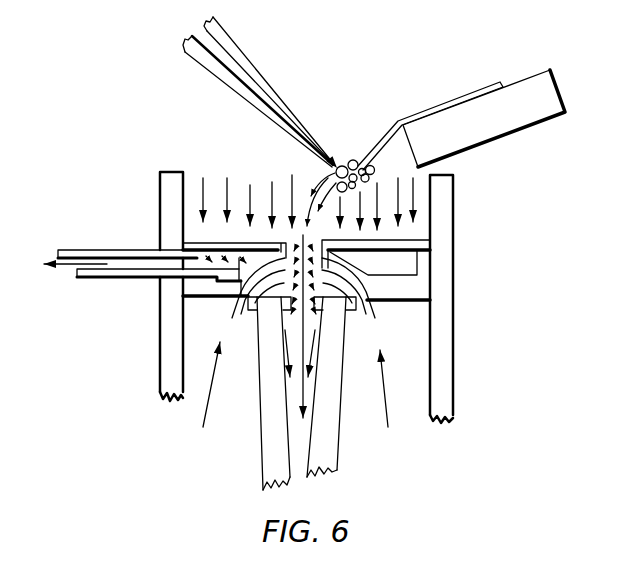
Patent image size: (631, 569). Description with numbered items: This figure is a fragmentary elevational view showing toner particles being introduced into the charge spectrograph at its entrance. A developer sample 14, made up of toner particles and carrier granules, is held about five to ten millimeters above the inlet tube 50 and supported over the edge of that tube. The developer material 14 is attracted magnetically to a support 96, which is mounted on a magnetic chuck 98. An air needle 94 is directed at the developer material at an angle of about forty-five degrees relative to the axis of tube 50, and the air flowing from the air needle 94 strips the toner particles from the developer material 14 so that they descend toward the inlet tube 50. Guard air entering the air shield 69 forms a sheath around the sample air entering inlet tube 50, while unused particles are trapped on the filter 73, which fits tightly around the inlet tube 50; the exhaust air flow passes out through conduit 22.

The developer material 14 is at (357, 156).
The conduit 22 is at (95, 250).
The inlet tube 50 is at (330, 450).
The air shield 69 is at (453, 364).
The filter 73 is at (210, 243).
The air needle 94 is at (276, 88).
The support 96 is at (437, 108).
The magnetic chuck 98 is at (565, 99).